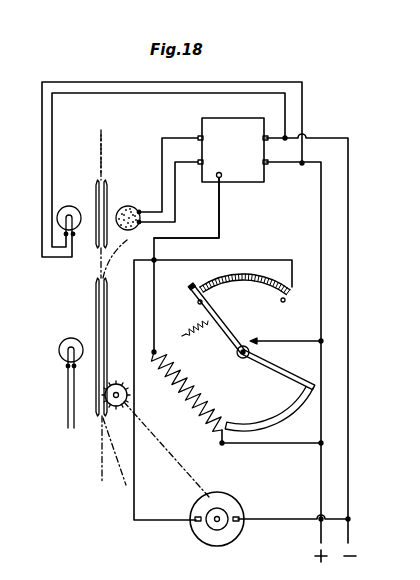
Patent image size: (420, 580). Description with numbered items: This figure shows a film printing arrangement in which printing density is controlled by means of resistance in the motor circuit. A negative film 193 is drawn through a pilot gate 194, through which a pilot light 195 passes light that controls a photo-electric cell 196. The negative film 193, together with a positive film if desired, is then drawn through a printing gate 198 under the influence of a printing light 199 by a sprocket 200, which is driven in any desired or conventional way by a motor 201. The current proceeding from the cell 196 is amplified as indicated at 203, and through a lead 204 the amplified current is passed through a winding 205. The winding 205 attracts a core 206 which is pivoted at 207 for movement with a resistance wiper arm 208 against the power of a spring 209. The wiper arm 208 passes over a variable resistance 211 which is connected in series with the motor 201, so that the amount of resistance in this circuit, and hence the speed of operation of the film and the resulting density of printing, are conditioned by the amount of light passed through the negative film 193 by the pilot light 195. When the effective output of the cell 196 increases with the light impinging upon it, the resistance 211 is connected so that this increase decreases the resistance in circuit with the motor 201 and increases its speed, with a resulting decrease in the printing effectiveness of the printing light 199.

The negative film 193 is at (101, 147).
The pilot gate 194 is at (107, 185).
The pilot light 195 is at (76, 212).
The photo-electric cell 196 is at (123, 206).
The printing gate 198 is at (97, 315).
The printing light 199 is at (60, 352).
The sprocket 200 is at (125, 405).
The motor 201 is at (226, 500).
The amplifier 203 is at (228, 125).
The lead 204 is at (222, 216).
The winding 205 is at (193, 390).
The core 206 is at (300, 415).
The pivot 207 is at (263, 340).
The resistance wiper arm 208 is at (217, 306).
The spring 209 is at (199, 336).
The variable resistance 211 is at (236, 275).